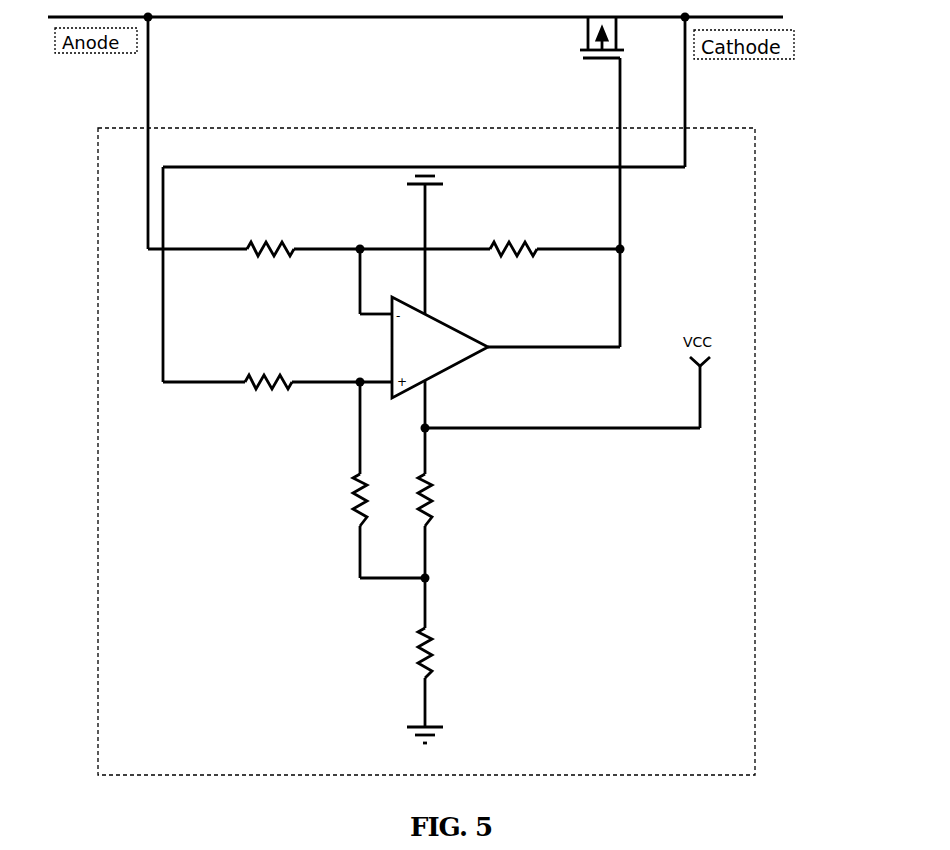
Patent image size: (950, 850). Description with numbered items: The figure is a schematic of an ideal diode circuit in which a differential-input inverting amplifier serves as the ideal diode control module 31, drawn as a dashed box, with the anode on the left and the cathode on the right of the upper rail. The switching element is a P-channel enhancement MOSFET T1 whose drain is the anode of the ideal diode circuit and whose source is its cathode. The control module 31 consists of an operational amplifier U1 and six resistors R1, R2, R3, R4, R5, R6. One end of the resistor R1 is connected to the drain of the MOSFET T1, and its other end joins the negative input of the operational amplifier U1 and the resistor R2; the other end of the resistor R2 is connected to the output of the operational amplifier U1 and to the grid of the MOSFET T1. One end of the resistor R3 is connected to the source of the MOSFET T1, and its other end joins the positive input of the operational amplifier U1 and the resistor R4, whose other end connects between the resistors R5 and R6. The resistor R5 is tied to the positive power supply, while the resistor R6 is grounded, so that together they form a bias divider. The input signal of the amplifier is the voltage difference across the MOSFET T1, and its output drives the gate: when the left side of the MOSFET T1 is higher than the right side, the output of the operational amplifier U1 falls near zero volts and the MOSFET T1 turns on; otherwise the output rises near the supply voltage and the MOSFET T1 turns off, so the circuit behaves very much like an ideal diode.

The ideal diode control module 31 is at (755, 492).
The MOSFET T1 is at (579, 37).
The operational amplifier U1 is at (442, 347).
The resistor R1 is at (266, 234).
The resistor R2 is at (510, 234).
The resistor R3 is at (265, 367).
The resistor R4 is at (345, 506).
The resistor R5 is at (410, 506).
The resistor R6 is at (410, 657).